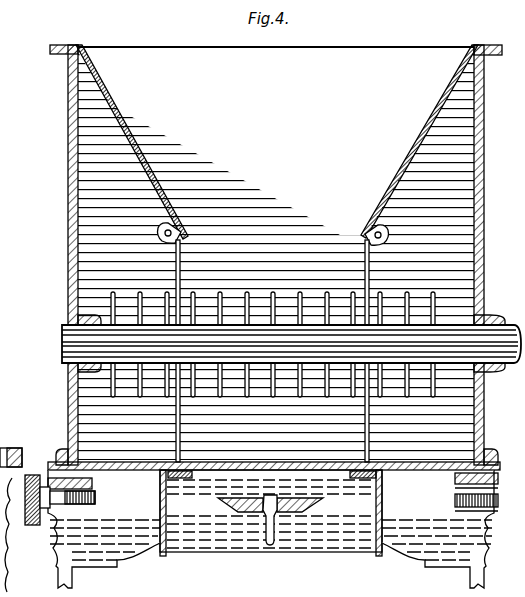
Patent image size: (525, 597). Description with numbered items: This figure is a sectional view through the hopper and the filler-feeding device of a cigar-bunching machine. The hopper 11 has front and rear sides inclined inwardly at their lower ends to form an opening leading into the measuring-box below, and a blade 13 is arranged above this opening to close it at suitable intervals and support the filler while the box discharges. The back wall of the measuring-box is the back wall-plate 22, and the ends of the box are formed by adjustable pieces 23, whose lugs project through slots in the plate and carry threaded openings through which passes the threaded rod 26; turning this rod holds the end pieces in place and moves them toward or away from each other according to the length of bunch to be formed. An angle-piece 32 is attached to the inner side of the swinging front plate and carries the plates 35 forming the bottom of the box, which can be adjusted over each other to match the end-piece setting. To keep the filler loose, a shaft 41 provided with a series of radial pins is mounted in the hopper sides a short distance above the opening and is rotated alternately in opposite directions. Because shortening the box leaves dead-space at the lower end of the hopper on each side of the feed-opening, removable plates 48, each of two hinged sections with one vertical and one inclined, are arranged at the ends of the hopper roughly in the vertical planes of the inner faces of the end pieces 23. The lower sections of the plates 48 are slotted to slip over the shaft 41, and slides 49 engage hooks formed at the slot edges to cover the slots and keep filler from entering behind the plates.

The hopper 11 is at (66, 227).
The blade 13 is at (272, 462).
The back wall-plate 22 is at (107, 560).
The adjustable pieces 23 is at (161, 520).
The threaded rod 26 is at (48, 510).
The angle-piece 32 is at (266, 512).
The plates 35 is at (204, 503).
The shaft 41 is at (291, 344).
The removable plates 48 is at (184, 244).
The slides 49 is at (181, 412).